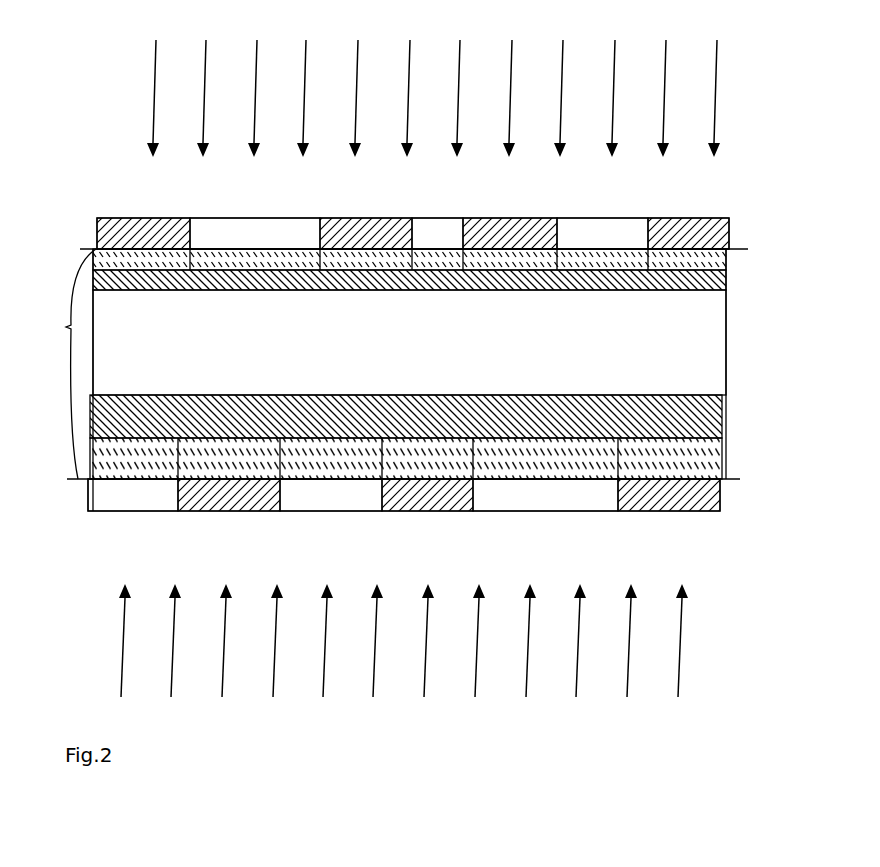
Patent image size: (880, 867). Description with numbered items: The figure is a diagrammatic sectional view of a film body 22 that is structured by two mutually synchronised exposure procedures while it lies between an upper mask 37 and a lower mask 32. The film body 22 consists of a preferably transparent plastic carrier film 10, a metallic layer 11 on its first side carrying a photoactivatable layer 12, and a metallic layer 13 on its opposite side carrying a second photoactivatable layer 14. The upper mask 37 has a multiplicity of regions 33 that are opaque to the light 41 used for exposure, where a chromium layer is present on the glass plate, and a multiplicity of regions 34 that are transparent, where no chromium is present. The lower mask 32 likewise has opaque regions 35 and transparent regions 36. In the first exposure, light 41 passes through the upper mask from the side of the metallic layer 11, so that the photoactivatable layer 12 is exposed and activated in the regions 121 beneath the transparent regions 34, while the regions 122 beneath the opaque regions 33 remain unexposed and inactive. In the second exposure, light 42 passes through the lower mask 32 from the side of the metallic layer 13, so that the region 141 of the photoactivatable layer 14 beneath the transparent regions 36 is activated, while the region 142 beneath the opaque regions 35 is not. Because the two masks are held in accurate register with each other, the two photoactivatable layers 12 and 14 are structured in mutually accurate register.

The carrier film 10 is at (724, 340).
The metallic layer 11 is at (728, 283).
The photoactivatable layer 12 is at (728, 260).
The metallic layer 13 is at (726, 414).
The photoactivatable layer 14 is at (722, 457).
The film body 22 is at (62, 364).
The opaque regions of the mask 33 is at (145, 217).
The transparent regions of the mask 34 is at (259, 218).
The opaque regions of the mask 35 is at (211, 511).
The transparent regions of the mask 36 is at (126, 511).
The upper electrode structure 37 is at (82, 226).
The mask 32 is at (72, 500).
The light 41 is at (433, 82).
The light 42 is at (403, 670).
The exposed regions of the photoactivatable layer 121 is at (262, 262).
The unexposed regions of the photoactivatable layer 122 is at (137, 263).
The exposed region of the photoactivatable layer 141 is at (123, 443).
The unexposed region of the photoactivatable layer 142 is at (220, 452).